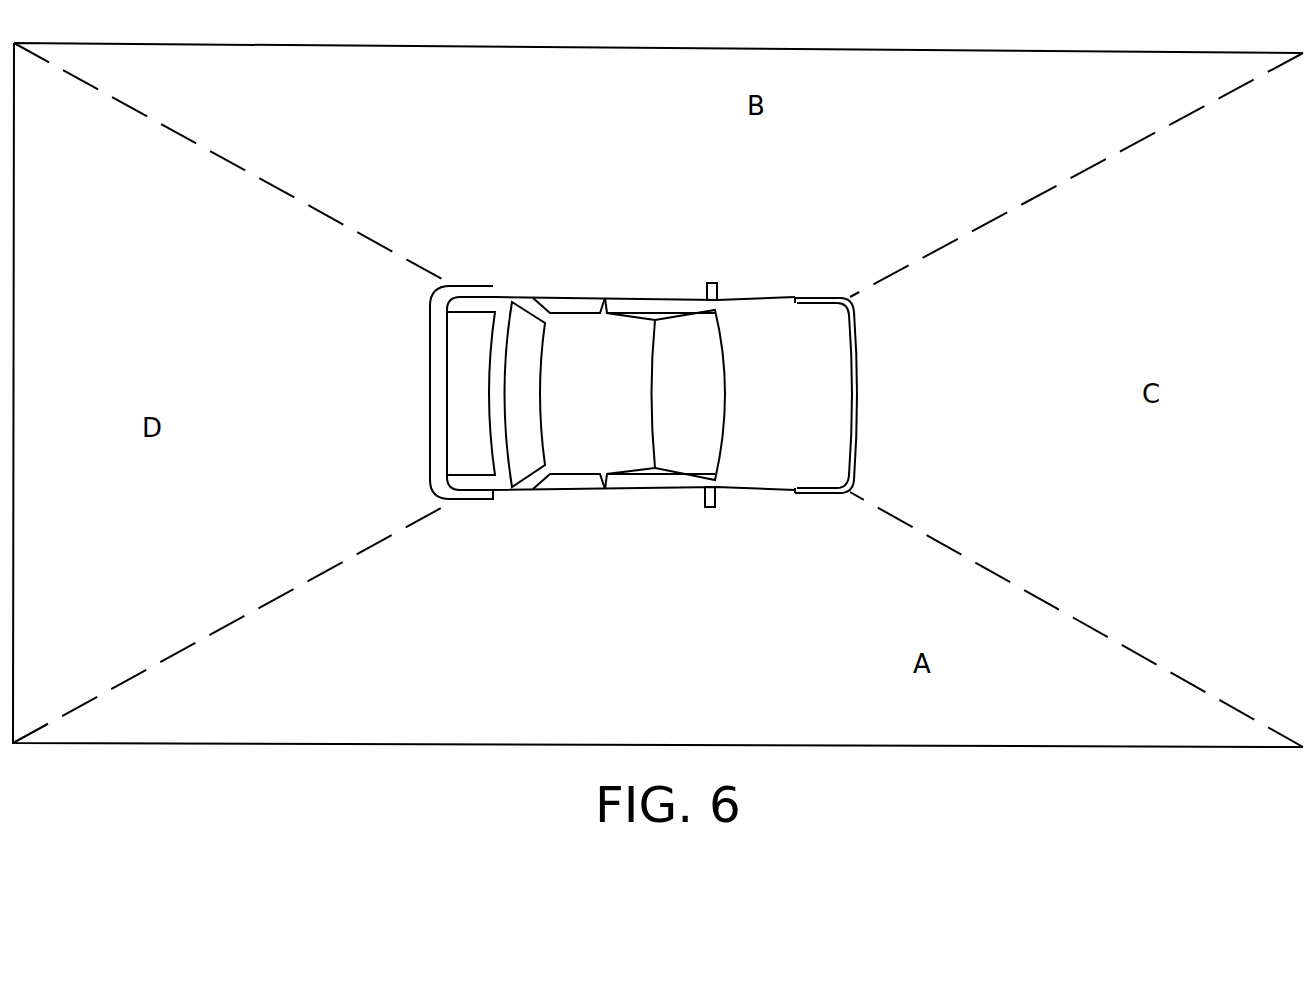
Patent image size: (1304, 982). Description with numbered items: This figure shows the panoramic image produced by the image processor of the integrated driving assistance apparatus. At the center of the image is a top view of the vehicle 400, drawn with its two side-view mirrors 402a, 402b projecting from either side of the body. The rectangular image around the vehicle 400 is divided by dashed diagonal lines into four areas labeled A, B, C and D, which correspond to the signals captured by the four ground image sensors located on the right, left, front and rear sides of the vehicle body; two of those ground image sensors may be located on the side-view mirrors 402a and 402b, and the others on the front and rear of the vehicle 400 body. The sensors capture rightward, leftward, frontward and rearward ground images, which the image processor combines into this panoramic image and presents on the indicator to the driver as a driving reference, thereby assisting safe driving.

The vehicle 400 is at (504, 295).
The side-view mirror 402a is at (710, 507).
The side-view mirror 402b is at (717, 284).